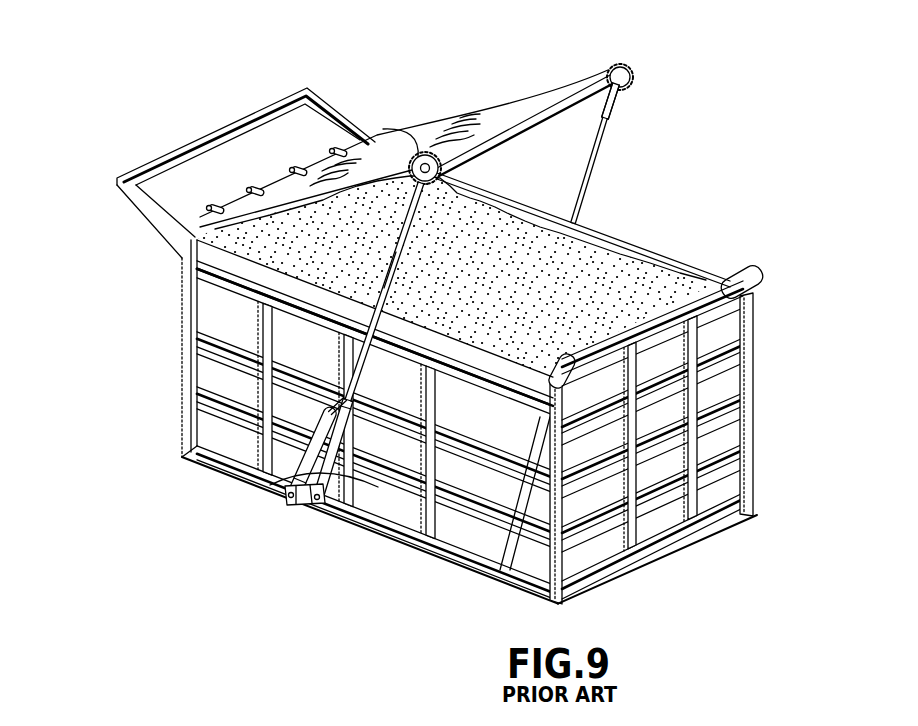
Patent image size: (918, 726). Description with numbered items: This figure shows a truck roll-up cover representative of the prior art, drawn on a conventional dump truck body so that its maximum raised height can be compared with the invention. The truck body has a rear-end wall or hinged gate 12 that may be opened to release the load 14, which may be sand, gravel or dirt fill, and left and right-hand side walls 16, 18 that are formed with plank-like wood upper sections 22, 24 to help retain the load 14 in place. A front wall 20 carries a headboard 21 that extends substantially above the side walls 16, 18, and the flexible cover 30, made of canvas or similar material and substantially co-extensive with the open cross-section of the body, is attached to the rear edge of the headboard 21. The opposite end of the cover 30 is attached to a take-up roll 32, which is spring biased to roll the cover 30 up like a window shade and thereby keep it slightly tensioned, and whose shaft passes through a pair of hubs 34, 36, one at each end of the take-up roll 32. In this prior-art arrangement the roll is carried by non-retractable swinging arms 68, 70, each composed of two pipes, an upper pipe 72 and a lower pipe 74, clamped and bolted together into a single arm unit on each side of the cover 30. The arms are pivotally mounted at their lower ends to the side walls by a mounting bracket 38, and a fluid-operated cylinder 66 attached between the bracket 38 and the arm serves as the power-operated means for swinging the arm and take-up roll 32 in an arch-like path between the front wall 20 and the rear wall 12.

The rear-end wall or hinged gate 12 is at (653, 530).
The load 14 is at (563, 302).
The left-hand side wall 16 is at (393, 503).
The right-hand side wall 18 is at (645, 255).
The front wall 20 is at (180, 363).
The headboard 21 is at (245, 142).
The plank-like wood upper section 22 is at (205, 258).
The plank-like wood upper section 24 is at (524, 204).
The flexible cover 30 is at (423, 123).
The take-up roll 32 is at (530, 116).
The hub 34 is at (413, 152).
The hub 36 is at (633, 78).
The mounting bracket 38 is at (303, 512).
The fluid-operated cylinder 66 is at (277, 487).
The non-retractable swinging arm 68 is at (384, 272).
The non-retractable swinging arm 70 is at (608, 142).
The upper pipe 72 is at (590, 176).
The lower pipe 74 is at (367, 480).